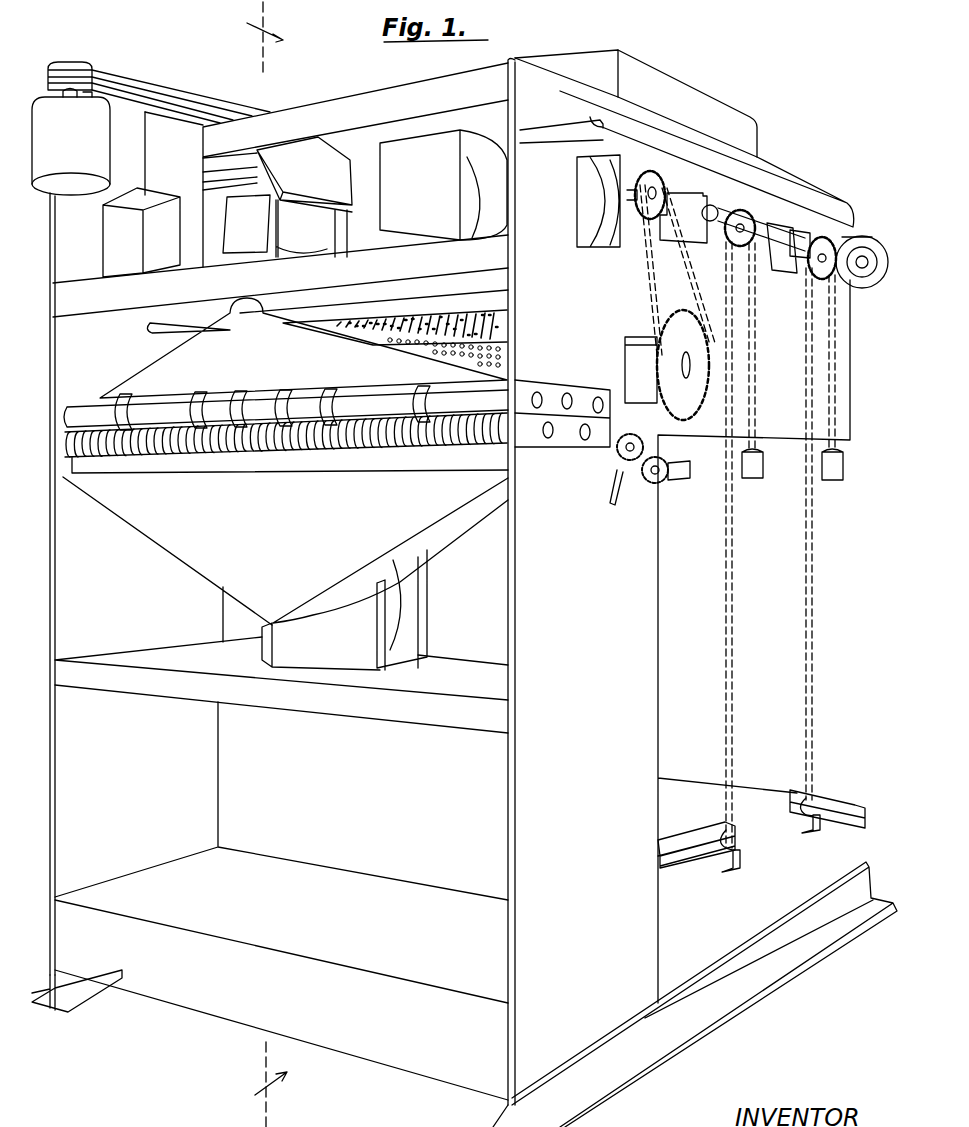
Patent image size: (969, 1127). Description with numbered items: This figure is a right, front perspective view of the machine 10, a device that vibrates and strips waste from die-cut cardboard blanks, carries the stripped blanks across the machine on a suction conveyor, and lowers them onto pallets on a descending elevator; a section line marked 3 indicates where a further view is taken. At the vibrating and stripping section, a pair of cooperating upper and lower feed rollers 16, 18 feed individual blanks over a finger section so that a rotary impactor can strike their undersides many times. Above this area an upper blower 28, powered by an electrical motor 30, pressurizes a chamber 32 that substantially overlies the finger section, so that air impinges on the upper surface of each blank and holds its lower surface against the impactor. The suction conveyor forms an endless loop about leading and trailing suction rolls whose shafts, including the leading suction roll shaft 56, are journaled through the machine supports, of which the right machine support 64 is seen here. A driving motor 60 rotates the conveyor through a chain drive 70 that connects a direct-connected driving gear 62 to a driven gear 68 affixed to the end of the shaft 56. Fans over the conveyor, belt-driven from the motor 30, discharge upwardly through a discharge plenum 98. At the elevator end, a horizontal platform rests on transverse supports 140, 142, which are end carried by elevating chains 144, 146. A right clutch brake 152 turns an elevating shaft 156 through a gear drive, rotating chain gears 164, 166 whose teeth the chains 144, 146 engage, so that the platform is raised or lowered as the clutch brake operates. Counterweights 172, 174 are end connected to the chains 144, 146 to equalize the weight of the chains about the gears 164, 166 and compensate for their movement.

The section line 3- 3 is at (277, 564).
The machine 10 is at (381, 1077).
The upper feed roller 16 is at (337, 393).
The lower feed roller 18 is at (380, 455).
The upper blower 28 is at (318, 238).
The electrical motor 30 is at (337, 157).
The chamber 32 is at (246, 383).
The leading suction roll shaft 56 is at (678, 363).
The driving motor 60 is at (587, 192).
The driving gear 62 is at (655, 172).
The right machine support 64 is at (602, 577).
The driven gear 68 is at (698, 425).
The chain drive 70 is at (647, 297).
The discharge plenum 98 is at (727, 112).
The transverse support 140 is at (817, 827).
The transverse support 142 is at (700, 880).
The elevating chain 144 is at (730, 657).
The elevating chain 146 is at (833, 613).
The right clutch brake 152 is at (877, 237).
The elevating shaft 156 is at (777, 233).
The chain gear 164 is at (760, 267).
The chain gear 166 is at (822, 275).
The counterweight 172 is at (752, 478).
The counterweight 174 is at (832, 480).